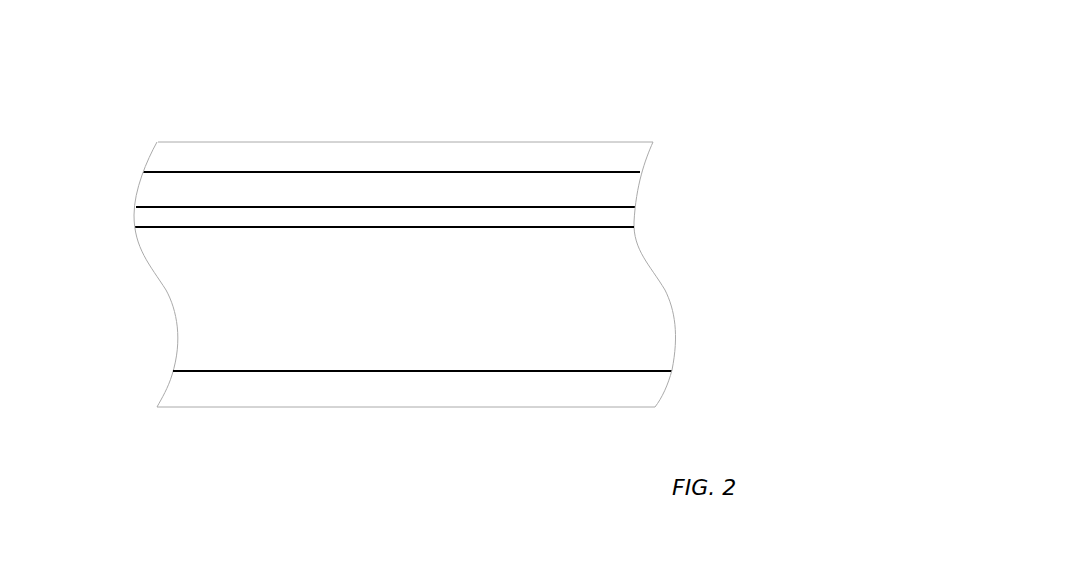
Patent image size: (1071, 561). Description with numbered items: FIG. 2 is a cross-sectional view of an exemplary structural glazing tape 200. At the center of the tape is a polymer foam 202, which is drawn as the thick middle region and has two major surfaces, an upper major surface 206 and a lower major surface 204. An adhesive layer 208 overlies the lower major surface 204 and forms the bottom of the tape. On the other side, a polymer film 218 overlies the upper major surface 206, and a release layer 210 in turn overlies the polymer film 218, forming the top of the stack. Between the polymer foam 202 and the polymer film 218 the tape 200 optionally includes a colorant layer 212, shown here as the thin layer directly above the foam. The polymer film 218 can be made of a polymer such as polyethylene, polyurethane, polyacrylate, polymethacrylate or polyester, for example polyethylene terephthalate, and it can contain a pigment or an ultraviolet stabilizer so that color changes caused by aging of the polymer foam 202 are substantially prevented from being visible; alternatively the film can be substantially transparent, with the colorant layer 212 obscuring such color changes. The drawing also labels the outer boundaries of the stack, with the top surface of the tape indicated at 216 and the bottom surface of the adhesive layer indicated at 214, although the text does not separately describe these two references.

The structural glazing tape 200 is at (595, 108).
The polymer foam 202 is at (158, 278).
The major surface 204 is at (448, 372).
The major surface 206 is at (247, 225).
The adhesive layer 208 is at (643, 388).
The release layer 210 is at (628, 158).
The colorant layer 212 is at (626, 220).
The bottom surface 214 is at (405, 408).
The top surface 216 is at (405, 139).
The polymer film 218 is at (626, 195).